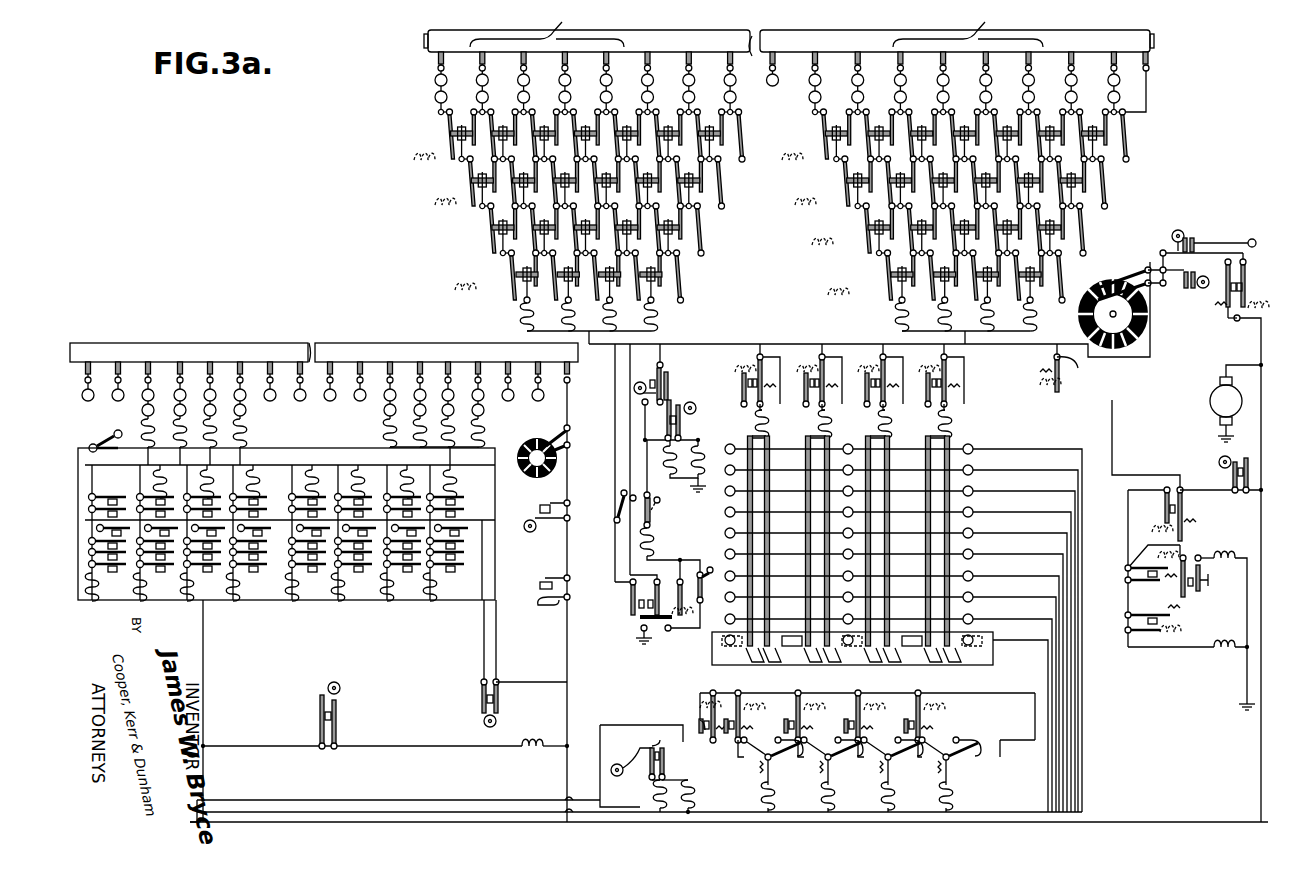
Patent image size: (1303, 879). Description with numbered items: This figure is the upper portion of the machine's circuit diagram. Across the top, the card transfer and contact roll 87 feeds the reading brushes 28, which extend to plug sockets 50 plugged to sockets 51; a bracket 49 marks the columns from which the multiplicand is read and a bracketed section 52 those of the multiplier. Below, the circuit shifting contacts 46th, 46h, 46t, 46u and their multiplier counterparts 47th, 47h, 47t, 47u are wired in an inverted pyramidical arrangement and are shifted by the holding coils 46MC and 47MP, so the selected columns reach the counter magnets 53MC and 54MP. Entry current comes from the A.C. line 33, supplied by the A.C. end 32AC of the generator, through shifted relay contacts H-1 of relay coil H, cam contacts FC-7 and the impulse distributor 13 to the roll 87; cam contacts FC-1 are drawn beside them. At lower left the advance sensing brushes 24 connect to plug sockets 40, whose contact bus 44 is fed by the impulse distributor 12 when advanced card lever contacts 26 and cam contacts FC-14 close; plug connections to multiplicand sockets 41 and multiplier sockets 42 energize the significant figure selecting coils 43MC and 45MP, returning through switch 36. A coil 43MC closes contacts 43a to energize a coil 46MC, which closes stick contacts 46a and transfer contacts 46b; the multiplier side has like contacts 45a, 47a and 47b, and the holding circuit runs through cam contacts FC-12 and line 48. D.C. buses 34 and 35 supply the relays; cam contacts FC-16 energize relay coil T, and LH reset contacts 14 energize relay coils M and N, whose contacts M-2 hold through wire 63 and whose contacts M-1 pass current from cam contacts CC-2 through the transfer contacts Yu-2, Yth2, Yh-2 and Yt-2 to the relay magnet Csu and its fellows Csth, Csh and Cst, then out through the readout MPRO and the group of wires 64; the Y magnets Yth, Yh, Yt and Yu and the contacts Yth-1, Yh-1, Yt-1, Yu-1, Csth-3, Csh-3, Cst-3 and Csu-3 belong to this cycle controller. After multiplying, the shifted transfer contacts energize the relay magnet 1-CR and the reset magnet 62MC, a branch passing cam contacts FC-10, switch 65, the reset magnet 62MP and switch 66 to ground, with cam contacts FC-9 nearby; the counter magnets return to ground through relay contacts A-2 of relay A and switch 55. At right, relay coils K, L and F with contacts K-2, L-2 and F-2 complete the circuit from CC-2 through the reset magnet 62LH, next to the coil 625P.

The card transfer and contact roll 87 is at (426, 32).
The bracket 49 is at (547, 30).
The bracketed section 52 is at (957, 33).
The plug sockets 50 is at (434, 80).
The sockets 51 is at (434, 97).
The brushes 28 is at (810, 58).
The thousands contact stack row 46th is at (722, 146).
The hundreds order circuit shifting contacts 46h is at (702, 196).
The tens order circuit shifting contacts 46t is at (682, 242).
The units order circuit shifting contacts 46u is at (660, 286).
The holding coils 46MC is at (460, 288).
The thousands contact stack row 47th is at (1130, 144).
The hundreds contact stack row 47h is at (1082, 196).
The tens order circuit shifting contacts 47t is at (1062, 244).
The units order circuit shifting contacts 47u is at (1042, 286).
The holding coils 47MP is at (830, 292).
The counter magnets 53MC is at (662, 318).
The counter magnets 54MP is at (897, 317).
The impulse distributor 13 is at (1142, 328).
The cam contact FC-1 is at (1192, 250).
The cam contacts FC-7 is at (1200, 292).
The relay contacts H-1 is at (1224, 290).
The relay coil H is at (1258, 312).
The A.C. bus 33 is at (1260, 766).
The A.C. end of generator 32AC is at (1210, 401).
The relay contacts M-1 is at (1076, 368).
The relay coil M is at (1055, 390).
The relay contacts K-2 is at (1178, 502).
The relay coil K is at (1156, 524).
The cam contacts CC-2 is at (1228, 491).
The relay L is at (1142, 548).
The relay contacts L-2 is at (1148, 577).
The coil 625P is at (1232, 548).
The relay coil F is at (1183, 628).
The relay contacts F-2 is at (1142, 632).
The reset magnet 62LH is at (1230, 660).
The plug sockets 40 is at (238, 390).
The contact bus 44 is at (364, 343).
The significant figure selecting coils 43MC is at (248, 433).
The multiplicand sockets 41 is at (249, 411).
The advance sensing brushes 24 is at (314, 362).
The multiplier sockets 42 is at (384, 409).
The significant figure selecting coils 45MP is at (386, 430).
The switch 36 is at (110, 438).
The stick contacts 46a is at (142, 555).
The contacts 43a is at (152, 492).
The transfer contacts 46b is at (172, 560).
The stick contacts 47a is at (372, 565).
The relay column 45a is at (405, 495).
The relay column 47b is at (398, 580).
The D.C. bus 34 is at (205, 662).
The D.C. bus 35 is at (232, 818).
The wire 63 is at (458, 800).
The relay coil T is at (530, 755).
The cam contacts FC-16 is at (340, 698).
The line 48 is at (484, 657).
The cam contacts FC-12 is at (524, 703).
The impulse distributor 12 is at (524, 444).
The cam contacts FC-14 is at (555, 505).
The advanced card lever contacts 26 is at (571, 582).
The cam contact FC-9 is at (664, 386).
The cam contacts FC-10 is at (690, 402).
The reset magnet 62MC is at (666, 456).
The relay magnet 1-CR is at (696, 482).
The switch 55 is at (618, 524).
The switch 65 is at (652, 513).
The reset magnet 62MP is at (660, 543).
The relay contacts A-2 is at (638, 620).
The relay coil A is at (680, 630).
The switch 66 is at (712, 582).
The thousands relay Yth is at (755, 368).
The hundreds relay Yh is at (818, 368).
The tens relay Yt is at (878, 368).
The units relay Yu is at (938, 368).
The relay contact Yth2 is at (766, 398).
The relay contact Yh-2 is at (830, 398).
The relay contact Yt-2 is at (890, 398).
The transfer contacts Yu-2 is at (950, 398).
The coil Csth is at (768, 422).
The coil Csh is at (831, 422).
The coil Cst is at (891, 422).
The relay magnet Csu is at (951, 424).
The readout MPRO is at (871, 539).
The group of wires 64 is at (1082, 770).
The relay contacts M-2 is at (717, 742).
The relay contact Csth-3 is at (738, 700).
The relay contact Csh-3 is at (798, 700).
The relay contact Cst-3 is at (858, 700).
The relay contact Csu-3 is at (918, 700).
The relay contact Yth-1 is at (775, 756).
The relay contact Yh-1 is at (832, 756).
The relay contact Yt-1 is at (891, 756).
The relay contact Yu-1 is at (951, 756).
The LH reset contacts 14 is at (662, 745).
The relay coil N is at (688, 790).